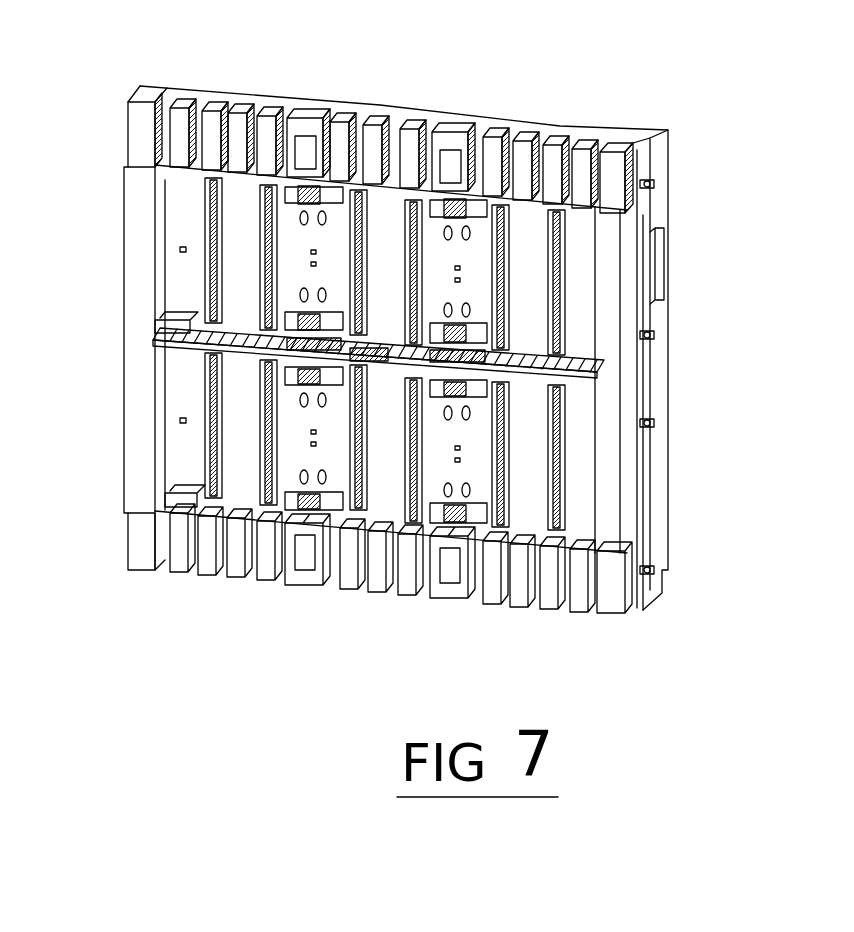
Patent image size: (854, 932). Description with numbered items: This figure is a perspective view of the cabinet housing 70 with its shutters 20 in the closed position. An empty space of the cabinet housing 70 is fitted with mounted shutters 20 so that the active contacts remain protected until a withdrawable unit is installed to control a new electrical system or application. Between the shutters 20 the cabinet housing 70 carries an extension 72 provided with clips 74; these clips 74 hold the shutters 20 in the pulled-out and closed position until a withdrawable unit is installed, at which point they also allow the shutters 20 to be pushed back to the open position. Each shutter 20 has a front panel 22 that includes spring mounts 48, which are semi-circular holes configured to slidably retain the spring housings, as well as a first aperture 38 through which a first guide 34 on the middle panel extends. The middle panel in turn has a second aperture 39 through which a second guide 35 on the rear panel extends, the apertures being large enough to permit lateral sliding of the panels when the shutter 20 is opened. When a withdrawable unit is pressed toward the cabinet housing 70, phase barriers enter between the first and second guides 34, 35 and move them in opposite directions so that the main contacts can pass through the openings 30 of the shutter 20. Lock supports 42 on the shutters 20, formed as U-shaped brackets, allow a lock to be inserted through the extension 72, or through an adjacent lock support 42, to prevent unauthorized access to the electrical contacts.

The cabinet housing 70 is at (603, 77).
The openings 30 is at (272, 178).
The first guide 34 is at (318, 190).
The second guide 35 is at (307, 195).
The first aperture 38 is at (442, 203).
The second aperture 39 is at (478, 205).
The spring mounts 48 is at (310, 293).
The lock supports 42 is at (367, 353).
The clips 74 is at (480, 353).
The extension 72 is at (568, 358).
The shutters 20 is at (309, 285).
The front panel 22 is at (382, 492).